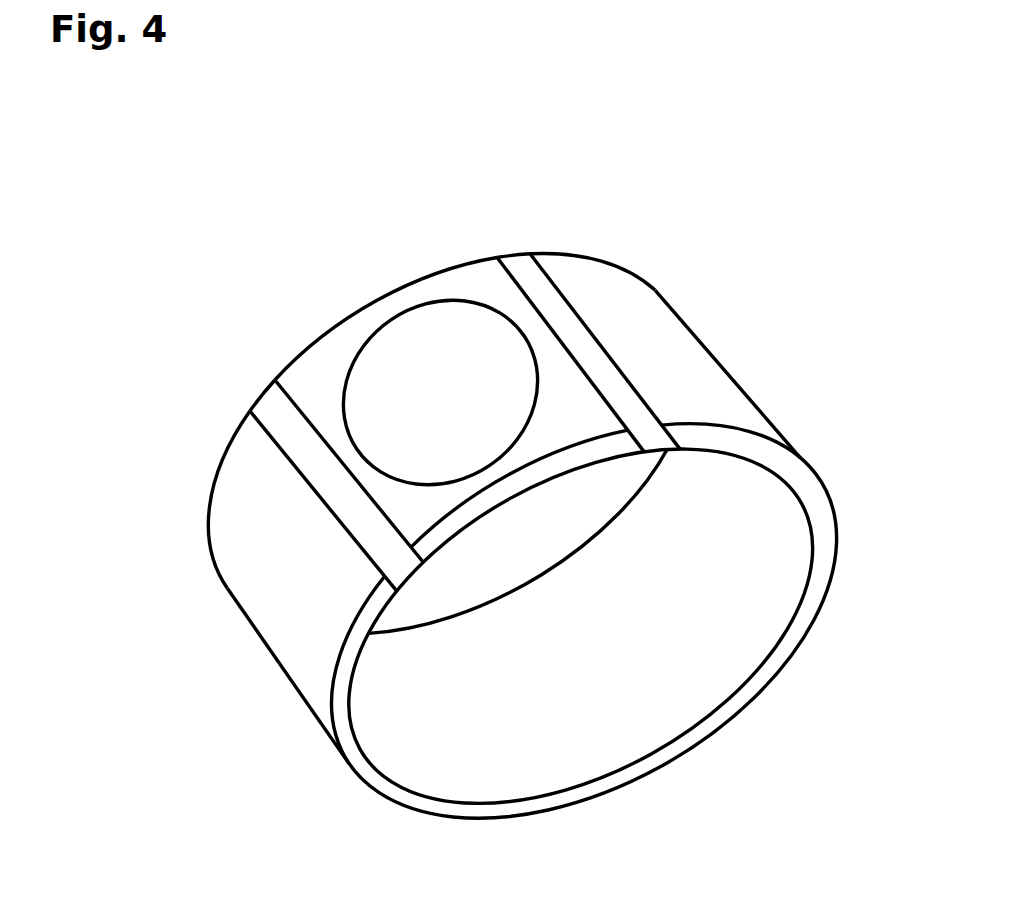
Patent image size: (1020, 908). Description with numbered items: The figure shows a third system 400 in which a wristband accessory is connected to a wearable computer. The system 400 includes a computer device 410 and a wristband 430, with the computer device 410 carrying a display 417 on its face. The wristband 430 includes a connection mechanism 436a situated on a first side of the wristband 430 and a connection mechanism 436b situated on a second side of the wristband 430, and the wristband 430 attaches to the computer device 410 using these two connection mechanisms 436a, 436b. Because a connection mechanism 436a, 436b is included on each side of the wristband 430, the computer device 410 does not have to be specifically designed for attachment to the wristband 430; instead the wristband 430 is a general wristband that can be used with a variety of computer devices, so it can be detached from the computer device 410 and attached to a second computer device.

The system 400 is at (783, 87).
The computer device 410 is at (451, 367).
The display 417 is at (372, 300).
The wristband 430 is at (353, 770).
The connection mechanism 436a is at (255, 403).
The connection mechanism 436b is at (518, 248).